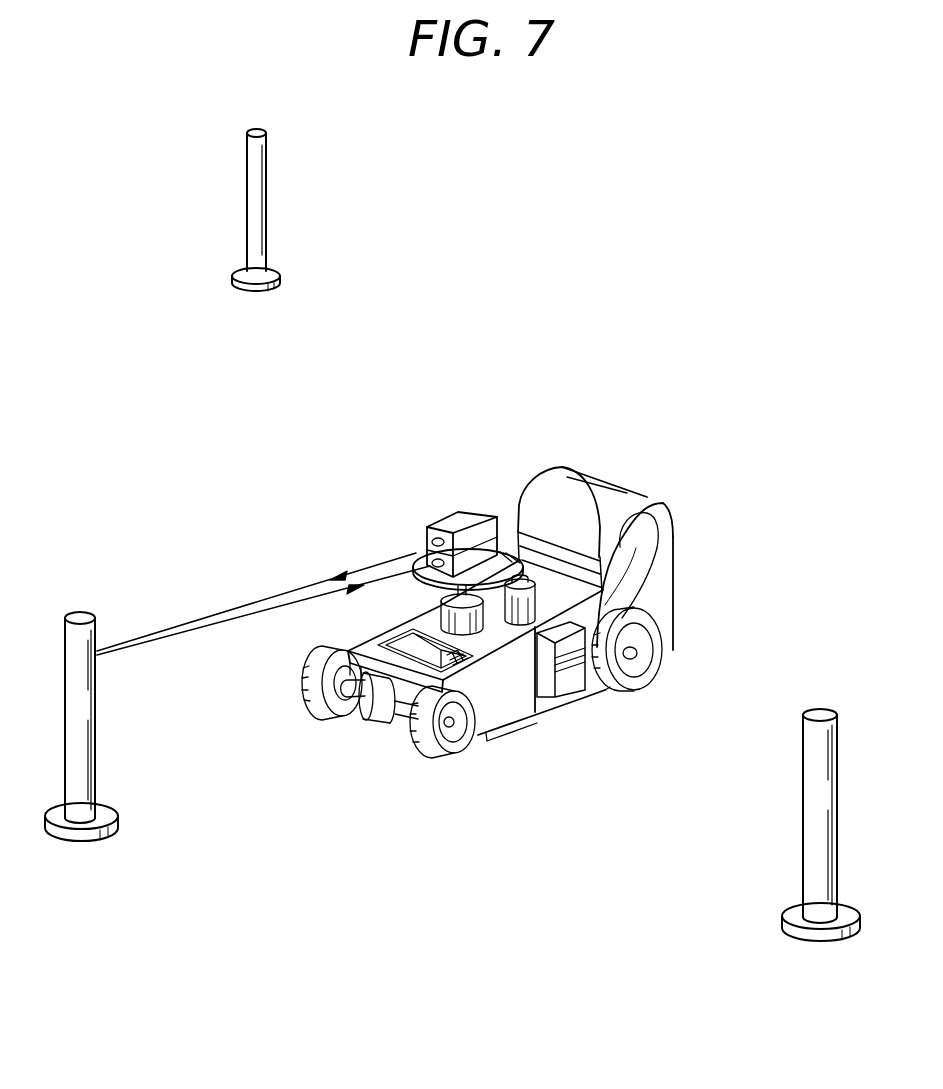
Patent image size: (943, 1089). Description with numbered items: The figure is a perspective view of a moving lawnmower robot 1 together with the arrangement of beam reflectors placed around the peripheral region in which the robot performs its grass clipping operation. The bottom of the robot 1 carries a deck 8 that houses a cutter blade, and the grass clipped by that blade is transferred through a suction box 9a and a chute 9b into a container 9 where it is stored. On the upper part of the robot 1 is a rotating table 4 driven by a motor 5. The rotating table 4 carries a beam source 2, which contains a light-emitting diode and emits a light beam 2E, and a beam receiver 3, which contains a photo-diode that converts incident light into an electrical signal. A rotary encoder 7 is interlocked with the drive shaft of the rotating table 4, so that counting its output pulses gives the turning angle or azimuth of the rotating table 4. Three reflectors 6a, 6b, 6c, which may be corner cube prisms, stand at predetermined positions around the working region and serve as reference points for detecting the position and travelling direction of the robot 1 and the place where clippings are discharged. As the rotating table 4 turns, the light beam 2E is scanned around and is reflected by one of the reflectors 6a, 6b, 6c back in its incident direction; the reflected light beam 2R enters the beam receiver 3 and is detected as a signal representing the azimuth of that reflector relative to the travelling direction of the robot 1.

The moving lawnmower robot 1 is at (520, 733).
The beam source 2 is at (455, 513).
The light beam 2E is at (233, 603).
The reflected light beam 2R is at (232, 625).
The beam receiver 3 is at (510, 556).
The rotating table 4 is at (418, 555).
The motor 5 is at (513, 630).
The reflector 6a is at (267, 172).
The reflector 6b is at (97, 748).
The reflector 6c is at (803, 776).
The rotary encoder 7 is at (440, 607).
The deck 8 is at (590, 707).
The container 9 is at (667, 555).
The suction box 9a is at (560, 690).
The chute 9b is at (645, 583).